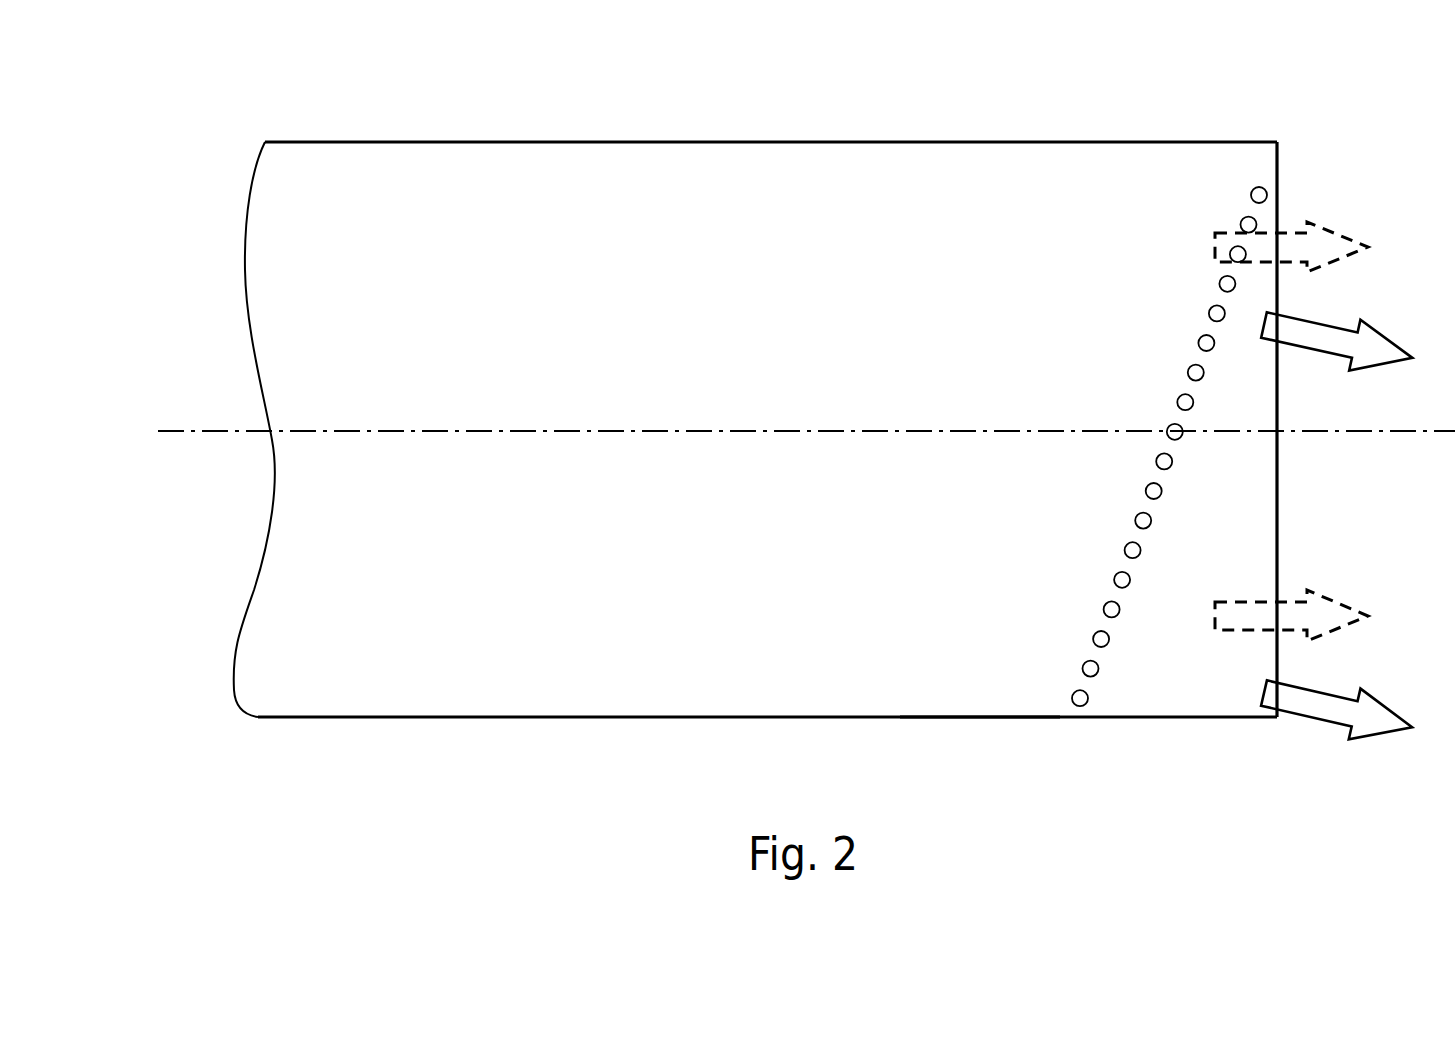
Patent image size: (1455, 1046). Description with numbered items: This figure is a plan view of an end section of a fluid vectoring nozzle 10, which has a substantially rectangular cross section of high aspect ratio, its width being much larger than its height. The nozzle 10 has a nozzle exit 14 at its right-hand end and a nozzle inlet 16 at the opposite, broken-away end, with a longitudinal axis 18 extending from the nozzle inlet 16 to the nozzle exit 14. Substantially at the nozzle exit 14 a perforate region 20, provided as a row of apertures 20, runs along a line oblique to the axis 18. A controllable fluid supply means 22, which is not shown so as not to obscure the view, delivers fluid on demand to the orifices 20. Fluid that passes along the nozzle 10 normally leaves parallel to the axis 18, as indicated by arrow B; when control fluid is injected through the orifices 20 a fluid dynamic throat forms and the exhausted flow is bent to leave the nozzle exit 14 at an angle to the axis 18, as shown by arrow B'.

The fluid vectoring nozzle 10 is at (598, 94).
The nozzle exit 14 is at (1351, 500).
The nozzle inlet 16 is at (178, 338).
The longitudinal axis 18 is at (230, 434).
The perforate region 20 is at (1095, 684).
The controllable fluid supply means 22 is at (976, 705).
The arrow B is at (1293, 408).
The arrow B' is at (1346, 518).